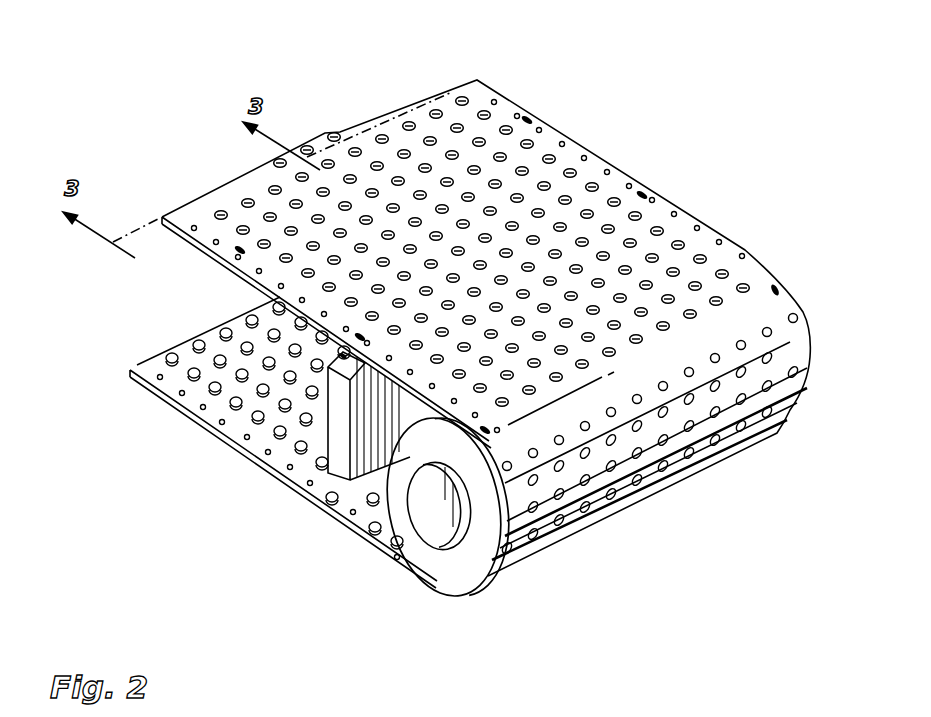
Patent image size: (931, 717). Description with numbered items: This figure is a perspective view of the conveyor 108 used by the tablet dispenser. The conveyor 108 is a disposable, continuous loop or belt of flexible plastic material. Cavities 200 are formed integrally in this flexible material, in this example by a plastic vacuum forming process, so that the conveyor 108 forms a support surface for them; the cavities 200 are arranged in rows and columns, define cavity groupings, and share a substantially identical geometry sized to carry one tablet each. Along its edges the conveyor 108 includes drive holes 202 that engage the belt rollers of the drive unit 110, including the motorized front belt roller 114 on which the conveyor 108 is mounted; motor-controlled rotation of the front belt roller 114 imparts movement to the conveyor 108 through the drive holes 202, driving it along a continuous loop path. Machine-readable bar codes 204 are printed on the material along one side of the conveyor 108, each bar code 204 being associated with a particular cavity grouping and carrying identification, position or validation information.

The cavities 200 is at (437, 113).
The drive holes 202 is at (137, 365).
The bar codes 204 is at (647, 190).
The conveyor 108 is at (337, 458).
The drive unit 110 is at (408, 524).
The front belt roller 114 is at (463, 568).